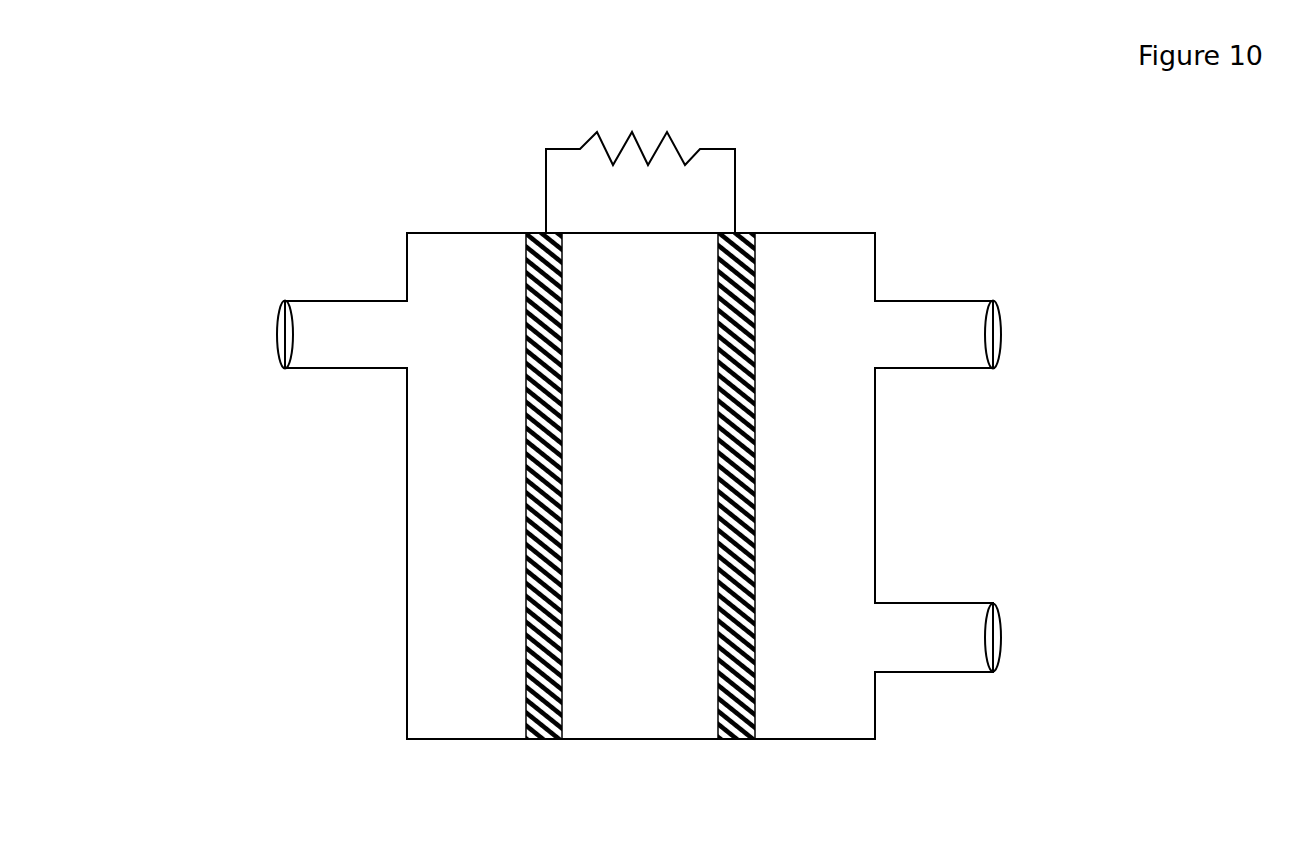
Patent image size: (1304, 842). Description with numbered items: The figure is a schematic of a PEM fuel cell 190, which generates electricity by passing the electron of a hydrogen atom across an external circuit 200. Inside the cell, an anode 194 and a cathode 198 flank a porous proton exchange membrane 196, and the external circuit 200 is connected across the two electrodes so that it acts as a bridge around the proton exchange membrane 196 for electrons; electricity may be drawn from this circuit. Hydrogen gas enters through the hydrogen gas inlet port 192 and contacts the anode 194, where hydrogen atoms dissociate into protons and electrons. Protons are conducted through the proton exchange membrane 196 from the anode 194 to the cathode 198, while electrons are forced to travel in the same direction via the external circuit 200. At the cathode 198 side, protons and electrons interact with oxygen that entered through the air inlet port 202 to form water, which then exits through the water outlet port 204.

The PEM fuel cell 190 is at (342, 198).
The hydrogen gas inlet port 192 is at (278, 317).
The anode 194 is at (525, 543).
The porous proton exchange membrane 196 is at (631, 668).
The cathode 198 is at (755, 585).
The external circuit 200 is at (737, 149).
The air inlet port 202 is at (1003, 329).
The water outlet port 204 is at (1003, 632).